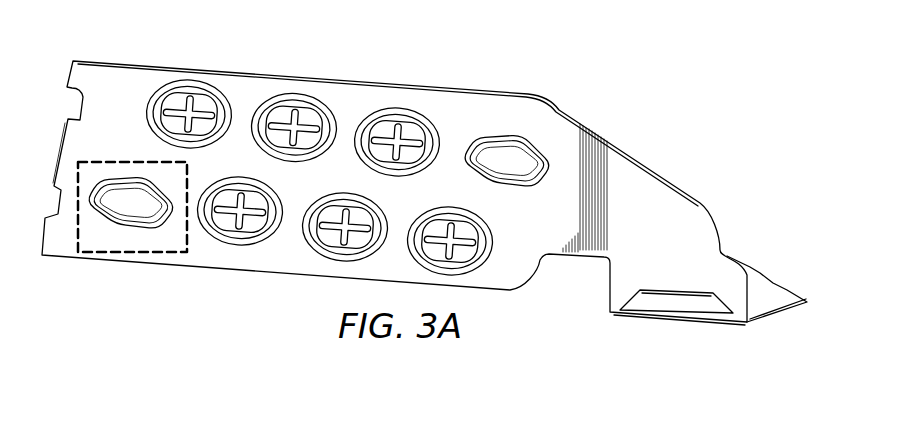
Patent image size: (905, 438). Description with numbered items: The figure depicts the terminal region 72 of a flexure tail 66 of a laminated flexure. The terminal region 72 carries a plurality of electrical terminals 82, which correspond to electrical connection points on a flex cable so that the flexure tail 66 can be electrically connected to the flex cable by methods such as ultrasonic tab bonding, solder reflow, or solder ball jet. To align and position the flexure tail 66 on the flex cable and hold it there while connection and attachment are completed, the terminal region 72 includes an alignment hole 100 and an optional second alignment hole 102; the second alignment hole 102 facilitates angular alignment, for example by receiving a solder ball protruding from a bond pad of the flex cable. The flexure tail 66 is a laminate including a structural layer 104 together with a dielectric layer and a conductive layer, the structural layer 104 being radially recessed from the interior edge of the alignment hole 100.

The terminal region 72 is at (470, 117).
The electrical terminals 82 is at (280, 113).
The alignment hole 100 is at (130, 200).
The second alignment hole 102 is at (522, 160).
The structural layer 104 is at (677, 302).
The flexure tail 66 is at (770, 293).